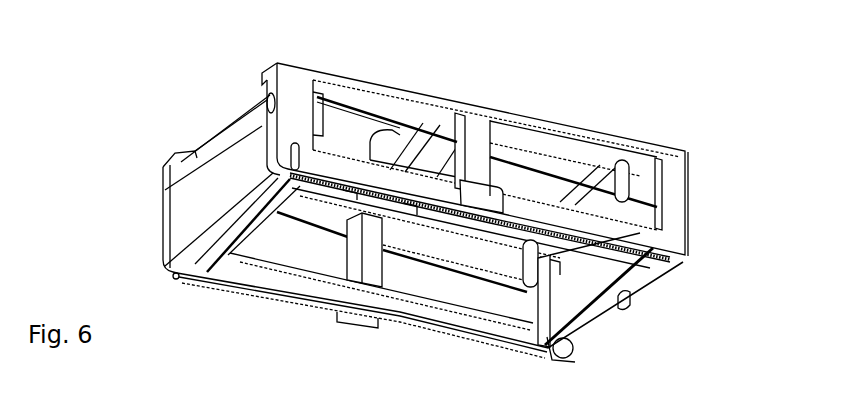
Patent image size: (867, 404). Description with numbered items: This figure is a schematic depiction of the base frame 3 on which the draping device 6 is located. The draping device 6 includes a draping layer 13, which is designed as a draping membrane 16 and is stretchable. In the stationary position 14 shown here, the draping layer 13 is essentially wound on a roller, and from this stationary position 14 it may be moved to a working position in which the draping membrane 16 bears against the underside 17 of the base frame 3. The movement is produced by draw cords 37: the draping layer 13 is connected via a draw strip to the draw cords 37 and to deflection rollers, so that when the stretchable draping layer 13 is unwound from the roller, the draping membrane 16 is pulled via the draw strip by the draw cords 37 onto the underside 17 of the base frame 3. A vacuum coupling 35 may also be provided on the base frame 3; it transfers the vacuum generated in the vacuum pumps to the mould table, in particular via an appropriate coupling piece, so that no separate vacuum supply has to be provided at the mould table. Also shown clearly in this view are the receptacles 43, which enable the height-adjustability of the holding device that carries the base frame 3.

The base frame 3 is at (715, 222).
The draping device 6 is at (212, 120).
The draping layer 13 is at (250, 142).
The stationary position 14 is at (127, 218).
The draping membrane 16 is at (220, 162).
The underside of base frame 17 is at (267, 297).
The vacuum coupling 35 is at (633, 307).
The draw cords 37 is at (538, 163).
The receptacles 43 is at (618, 180).